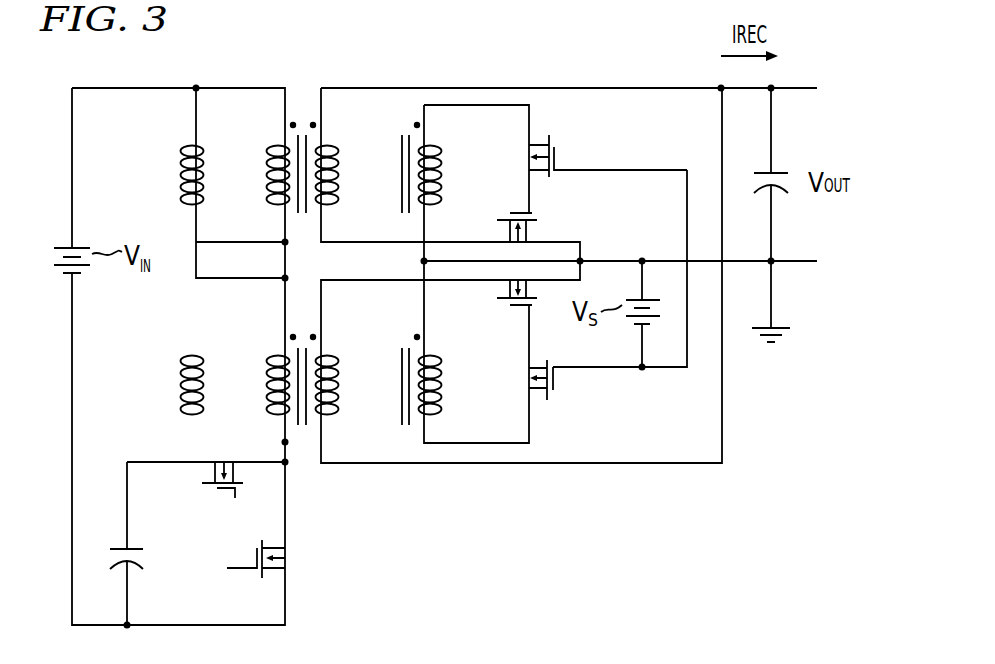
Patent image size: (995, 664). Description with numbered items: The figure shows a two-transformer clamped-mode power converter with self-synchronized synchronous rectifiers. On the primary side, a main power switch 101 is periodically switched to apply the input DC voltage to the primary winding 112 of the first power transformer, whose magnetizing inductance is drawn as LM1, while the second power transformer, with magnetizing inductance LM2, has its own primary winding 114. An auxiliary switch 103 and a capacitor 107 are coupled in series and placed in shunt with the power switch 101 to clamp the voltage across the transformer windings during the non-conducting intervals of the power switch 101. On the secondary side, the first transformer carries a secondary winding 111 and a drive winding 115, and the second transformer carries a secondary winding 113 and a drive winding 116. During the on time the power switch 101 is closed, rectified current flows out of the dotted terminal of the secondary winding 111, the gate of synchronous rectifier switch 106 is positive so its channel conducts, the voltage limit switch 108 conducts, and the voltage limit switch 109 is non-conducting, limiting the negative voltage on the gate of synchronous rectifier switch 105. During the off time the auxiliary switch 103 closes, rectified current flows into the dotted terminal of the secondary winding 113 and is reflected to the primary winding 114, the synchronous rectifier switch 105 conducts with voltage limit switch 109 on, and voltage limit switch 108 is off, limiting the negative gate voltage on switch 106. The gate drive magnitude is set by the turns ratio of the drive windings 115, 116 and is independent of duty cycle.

The magnetizing inductance of first transformer LM1 is at (180, 153).
The magnetizing inductance of second transformer LM2 is at (180, 361).
The power switch 101 is at (258, 578).
The auxiliary switch 103 is at (208, 490).
The synchronous rectifier switch 105 is at (500, 306).
The synchronous rectifier switch 106 is at (540, 216).
The capacitor 107 is at (147, 560).
The voltage limit switch 108 is at (558, 141).
The voltage limit switch 109 is at (556, 396).
The secondary winding 111 is at (340, 156).
The primary winding 112 is at (268, 153).
The secondary winding 113 is at (340, 364).
The primary winding 114 is at (268, 361).
The drive winding 115 is at (444, 156).
The drive winding 116 is at (445, 378).